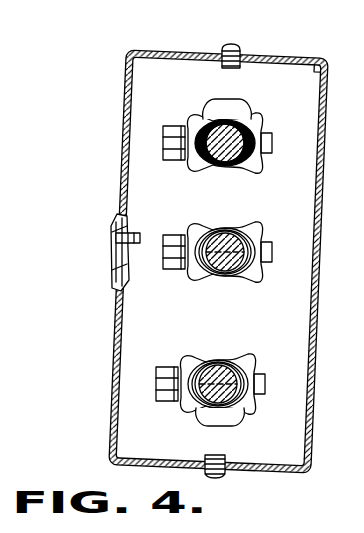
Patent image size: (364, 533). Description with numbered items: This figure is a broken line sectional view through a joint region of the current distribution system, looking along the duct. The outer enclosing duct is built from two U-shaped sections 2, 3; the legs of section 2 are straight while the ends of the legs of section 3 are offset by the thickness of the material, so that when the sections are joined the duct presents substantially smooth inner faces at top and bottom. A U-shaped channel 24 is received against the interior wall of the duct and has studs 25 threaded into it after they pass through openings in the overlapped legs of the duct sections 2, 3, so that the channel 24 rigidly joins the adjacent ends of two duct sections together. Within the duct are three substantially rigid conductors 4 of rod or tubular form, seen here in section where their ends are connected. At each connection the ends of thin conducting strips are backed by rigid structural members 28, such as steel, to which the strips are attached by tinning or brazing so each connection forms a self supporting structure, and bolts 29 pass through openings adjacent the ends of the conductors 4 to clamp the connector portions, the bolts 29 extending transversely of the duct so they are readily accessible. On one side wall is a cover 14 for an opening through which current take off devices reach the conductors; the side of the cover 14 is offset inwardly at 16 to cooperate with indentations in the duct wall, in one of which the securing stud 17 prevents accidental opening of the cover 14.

The U-shaped section 2 is at (201, 244).
The U-shaped section 3 is at (276, 55).
The U-shaped channel 24 is at (304, 58).
The cover 14 is at (108, 354).
The stud 25 is at (236, 45).
The inwardly offset portion 16 is at (120, 259).
The securing stud 17 is at (116, 237).
The rigid structural member 28 is at (207, 119).
The bolt 29 is at (172, 150).
The conductor section 4 is at (221, 245).